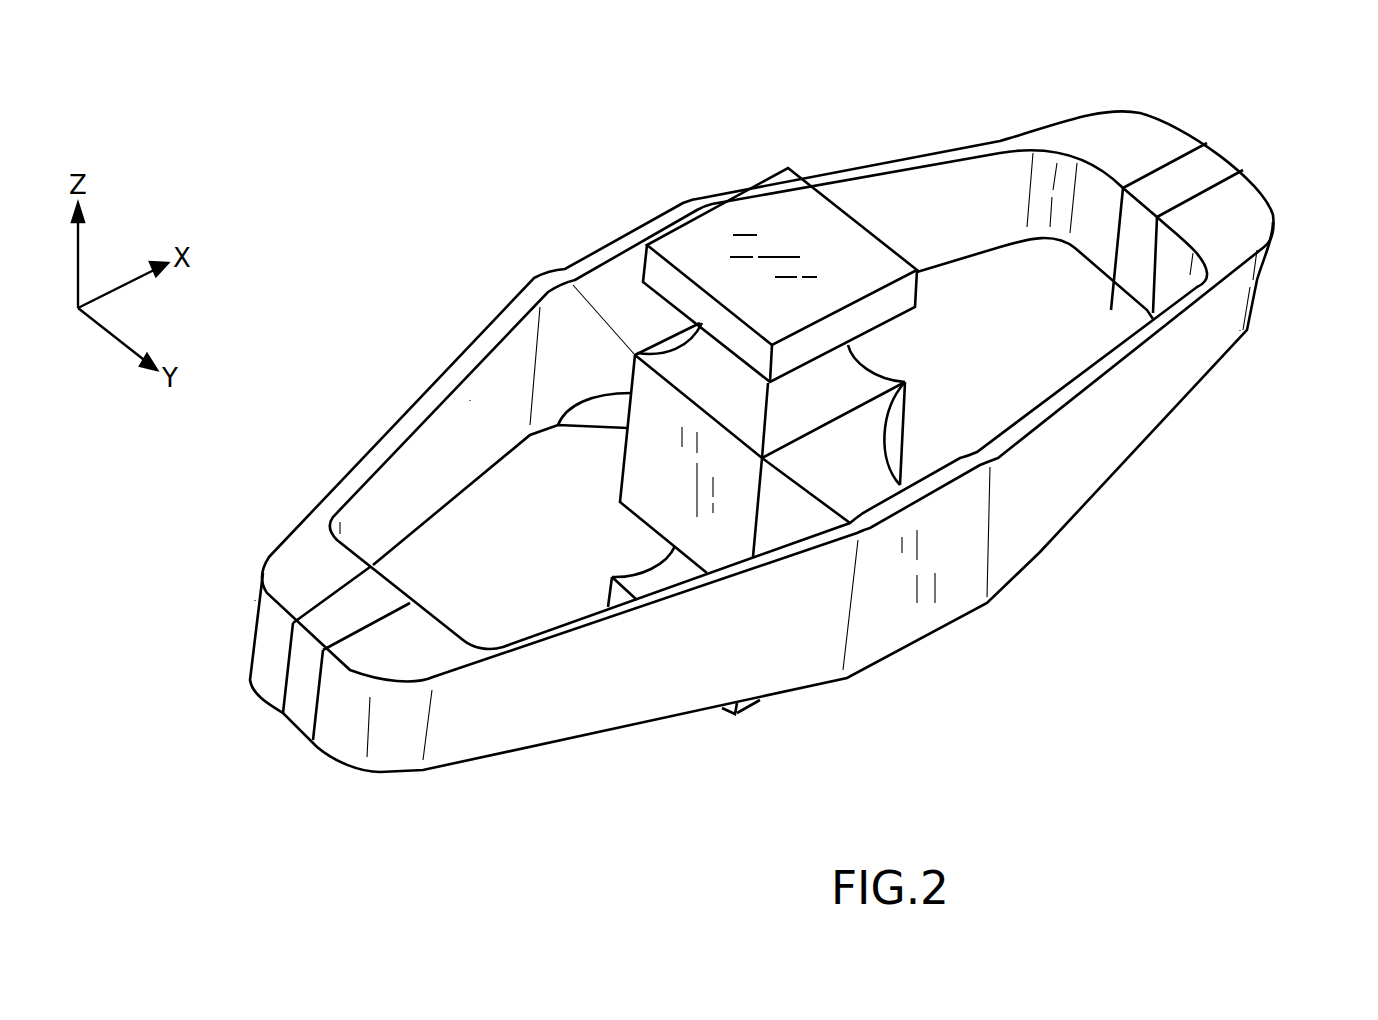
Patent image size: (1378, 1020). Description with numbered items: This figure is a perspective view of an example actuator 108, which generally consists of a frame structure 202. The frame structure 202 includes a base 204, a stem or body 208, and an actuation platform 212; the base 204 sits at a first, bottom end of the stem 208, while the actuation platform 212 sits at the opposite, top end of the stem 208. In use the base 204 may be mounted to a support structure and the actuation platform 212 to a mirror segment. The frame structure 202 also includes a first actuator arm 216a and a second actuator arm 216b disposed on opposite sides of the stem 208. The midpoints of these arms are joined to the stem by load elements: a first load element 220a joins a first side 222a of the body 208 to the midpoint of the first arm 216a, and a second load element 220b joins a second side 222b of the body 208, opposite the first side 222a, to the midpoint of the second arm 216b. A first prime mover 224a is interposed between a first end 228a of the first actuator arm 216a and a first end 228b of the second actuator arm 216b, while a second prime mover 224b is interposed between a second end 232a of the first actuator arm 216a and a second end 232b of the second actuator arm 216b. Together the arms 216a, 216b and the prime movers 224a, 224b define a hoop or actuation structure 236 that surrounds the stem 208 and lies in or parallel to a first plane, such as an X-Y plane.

The actuator 108 is at (1011, 137).
The frame structure 202 is at (880, 355).
The base 204 is at (743, 705).
The stem or body 208 is at (648, 510).
The actuation platform 212 is at (877, 264).
The first actuator arm 216a is at (1040, 535).
The second actuator arm 216b is at (483, 340).
The first load element 220a is at (862, 460).
The second load element 220b is at (563, 320).
The first side of the body 222a is at (897, 410).
The second side of the body 222b is at (627, 430).
The first prime mover 224a is at (293, 717).
The second prime mover 224b is at (1215, 162).
The first end of the first actuator arm 228a is at (378, 768).
The first end of the second actuator arm 228b is at (273, 653).
The second end of the first actuator arm 232a is at (1247, 195).
The second end of the second actuator arm 232b is at (1178, 132).
The hoop or actuation structure 236 is at (1233, 327).